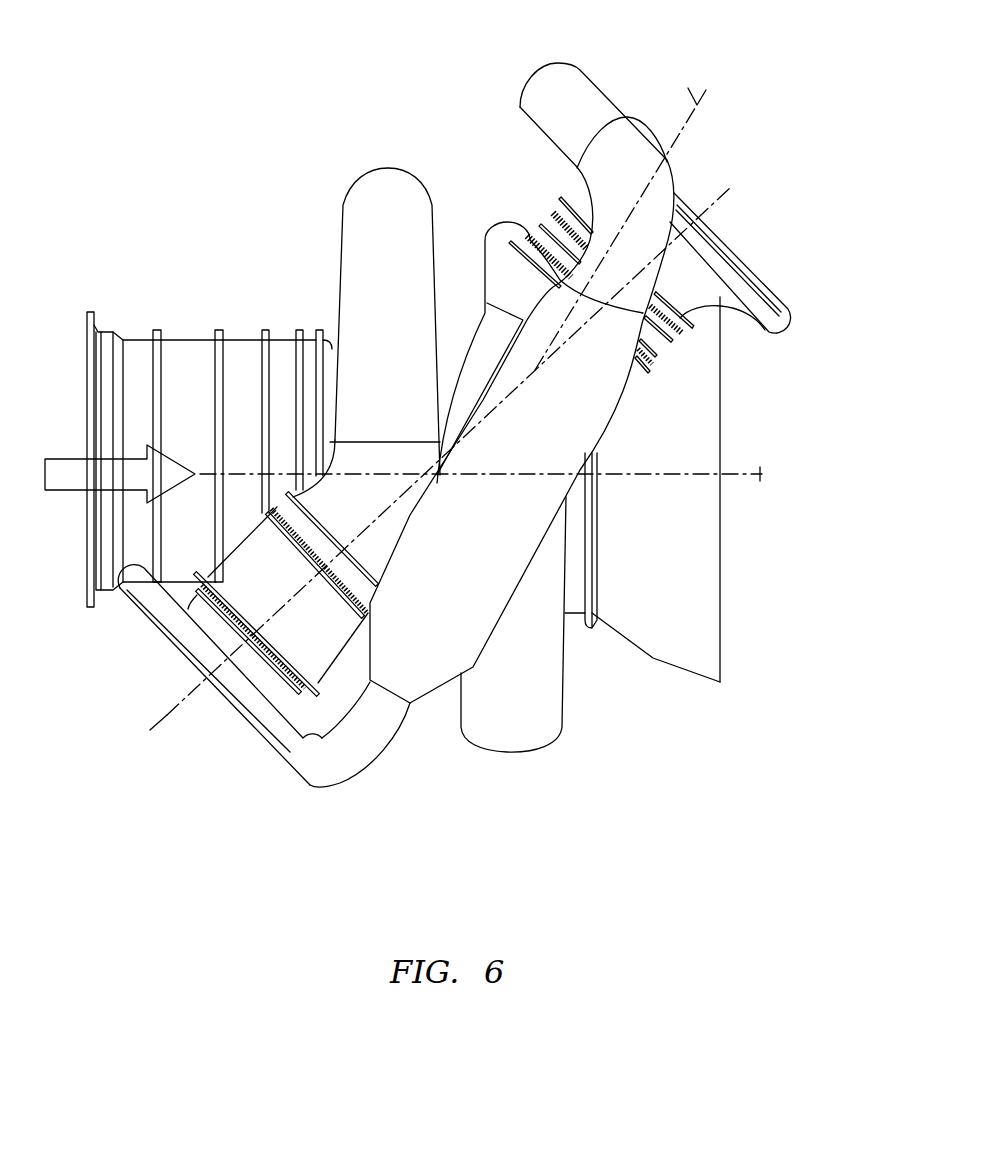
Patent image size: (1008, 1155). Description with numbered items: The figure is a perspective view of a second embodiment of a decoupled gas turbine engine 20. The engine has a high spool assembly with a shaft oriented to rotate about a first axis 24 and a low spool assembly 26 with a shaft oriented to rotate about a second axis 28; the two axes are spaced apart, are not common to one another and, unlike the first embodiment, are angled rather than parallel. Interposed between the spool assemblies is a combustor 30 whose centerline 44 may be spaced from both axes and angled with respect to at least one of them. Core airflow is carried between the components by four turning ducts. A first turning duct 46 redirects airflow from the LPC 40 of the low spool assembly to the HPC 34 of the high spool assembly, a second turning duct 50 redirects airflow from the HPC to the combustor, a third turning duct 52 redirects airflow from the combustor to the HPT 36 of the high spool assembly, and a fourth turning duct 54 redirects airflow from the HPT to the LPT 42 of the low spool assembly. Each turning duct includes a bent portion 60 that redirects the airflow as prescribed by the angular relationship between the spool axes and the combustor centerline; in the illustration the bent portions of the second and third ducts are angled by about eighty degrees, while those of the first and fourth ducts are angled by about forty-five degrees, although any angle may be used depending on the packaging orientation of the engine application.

The engine 20 is at (752, 98).
The first axis 24 is at (162, 728).
The low spool assembly 26 is at (74, 316).
The second axis 28 is at (760, 481).
The combustor 30 is at (550, 428).
The HPC 34 is at (338, 670).
The HPT 36 is at (665, 340).
The LPC 40 is at (192, 340).
The LPT 42 is at (653, 658).
The centerline 44 is at (694, 78).
The first turning duct 46 is at (387, 168).
The second turning duct 50 is at (247, 727).
The third turning duct 52 is at (753, 267).
The fourth turning duct 54 is at (545, 742).
The bent portion 60 is at (672, 173).